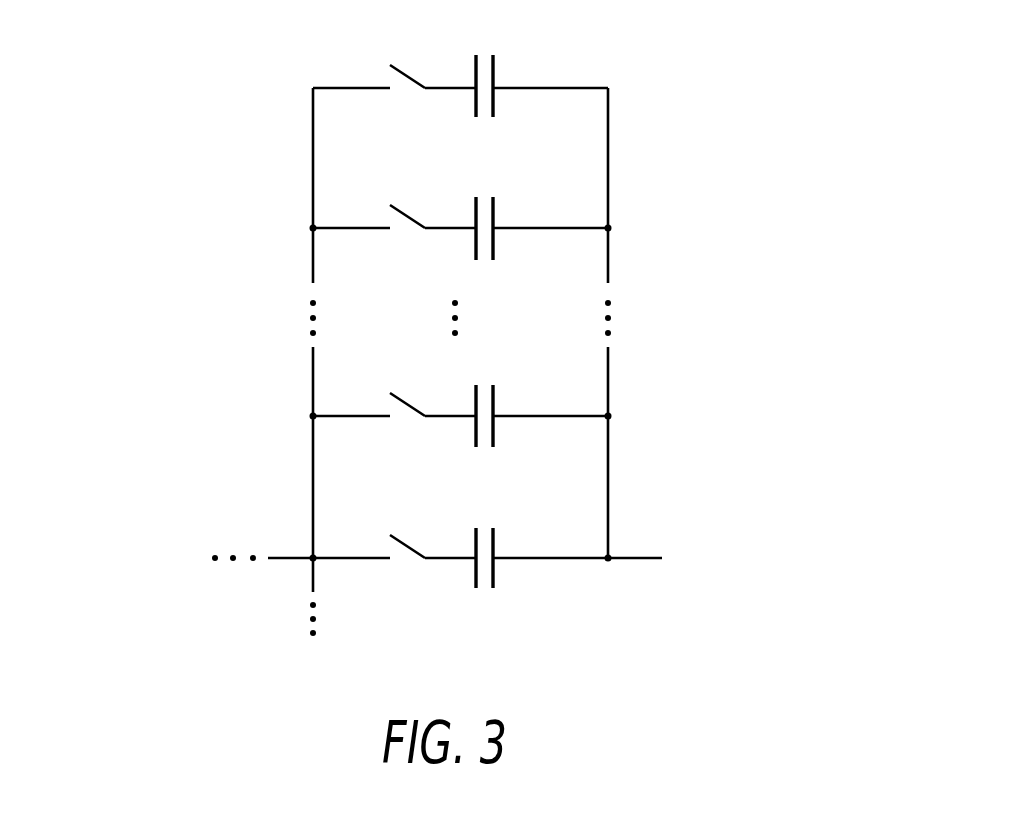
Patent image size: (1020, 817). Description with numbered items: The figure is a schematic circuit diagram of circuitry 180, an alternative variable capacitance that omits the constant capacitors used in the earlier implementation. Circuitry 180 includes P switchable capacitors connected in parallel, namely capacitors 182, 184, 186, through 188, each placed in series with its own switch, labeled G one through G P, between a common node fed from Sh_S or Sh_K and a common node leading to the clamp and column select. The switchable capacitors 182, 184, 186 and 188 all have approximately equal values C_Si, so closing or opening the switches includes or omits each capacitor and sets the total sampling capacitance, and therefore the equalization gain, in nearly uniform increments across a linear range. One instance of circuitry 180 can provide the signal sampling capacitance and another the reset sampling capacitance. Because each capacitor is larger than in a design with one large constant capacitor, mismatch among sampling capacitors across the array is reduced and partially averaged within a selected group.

The circuitry 180 is at (726, 258).
The switchable capacitor 182 is at (494, 72).
The switchable capacitor 184 is at (475, 243).
The switchable capacitor 186 is at (475, 431).
The switchable capacitor 188 is at (494, 575).